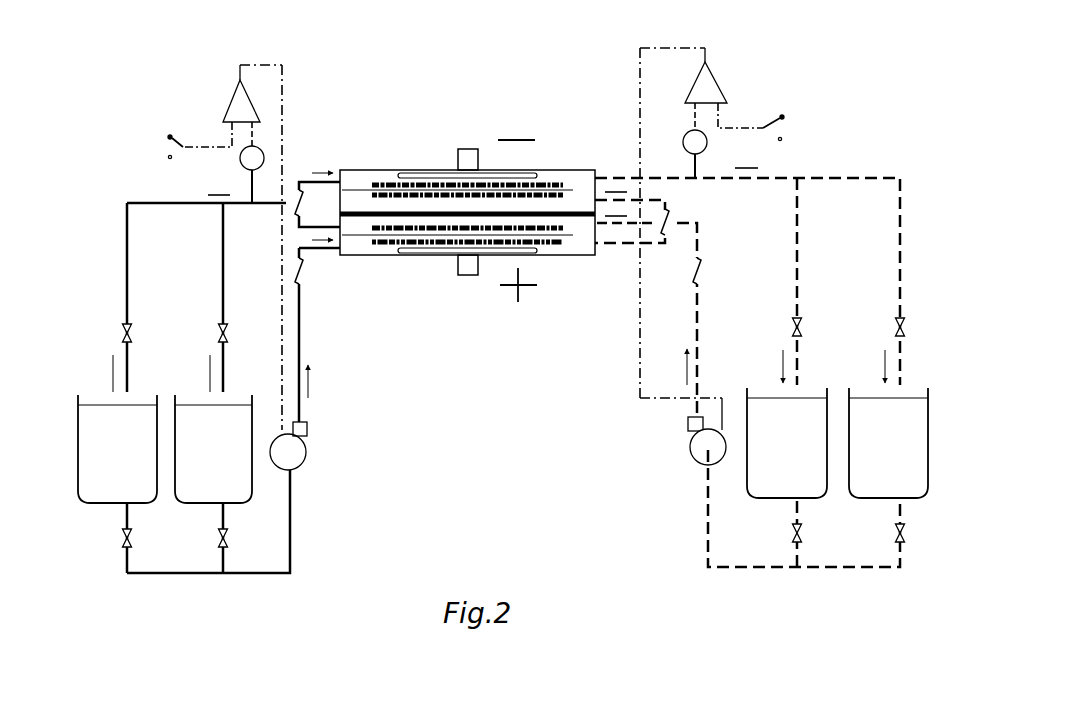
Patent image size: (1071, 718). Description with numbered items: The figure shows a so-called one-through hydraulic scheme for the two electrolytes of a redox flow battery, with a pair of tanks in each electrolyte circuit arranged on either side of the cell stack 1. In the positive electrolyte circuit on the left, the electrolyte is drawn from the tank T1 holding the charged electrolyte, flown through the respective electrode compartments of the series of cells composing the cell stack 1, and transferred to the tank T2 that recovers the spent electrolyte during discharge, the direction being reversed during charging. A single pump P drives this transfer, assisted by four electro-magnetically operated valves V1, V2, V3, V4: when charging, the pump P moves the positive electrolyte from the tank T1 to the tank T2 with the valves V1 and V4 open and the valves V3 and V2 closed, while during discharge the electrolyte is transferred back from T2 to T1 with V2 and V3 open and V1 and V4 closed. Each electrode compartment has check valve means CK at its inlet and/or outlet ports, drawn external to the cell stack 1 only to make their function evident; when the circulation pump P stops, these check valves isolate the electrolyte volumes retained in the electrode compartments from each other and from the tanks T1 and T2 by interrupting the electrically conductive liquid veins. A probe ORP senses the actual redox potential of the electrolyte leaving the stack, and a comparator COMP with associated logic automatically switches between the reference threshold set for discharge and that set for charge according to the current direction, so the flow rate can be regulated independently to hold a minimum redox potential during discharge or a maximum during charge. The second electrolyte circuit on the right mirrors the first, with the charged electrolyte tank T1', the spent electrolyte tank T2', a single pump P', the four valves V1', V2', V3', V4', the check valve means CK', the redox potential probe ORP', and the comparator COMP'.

The cell stack 1 is at (467, 205).
The charged positive electrolyte tank T1 is at (117, 449).
The spent positive electrolyte tank T2 is at (213, 449).
The electro-magnetically operated valve V1 is at (137, 538).
The electro-magnetically operated valve V2 is at (233, 538).
The electro-magnetically operated valve V3 is at (137, 333).
The electro-magnetically operated valve V4 is at (233, 333).
The circulation pump P is at (298, 446).
The check valve means CK is at (307, 237).
The redox potential probe ORP is at (252, 162).
The comparator COMP is at (181, 247).
The charged negative electrolyte tank T1' is at (787, 443).
The spent negative electrolyte tank T2' is at (888, 443).
The electro-magnetically operated valve V1' is at (910, 533).
The electro-magnetically operated valve V2' is at (807, 533).
The electro-magnetically operated valve V3' is at (910, 327).
The electro-magnetically operated valve V4' is at (807, 327).
The circulation pump P' is at (694, 441).
The check valve means CK' is at (690, 244).
The redox potential probe ORP' is at (695, 140).
The comparator COMP' is at (759, 239).